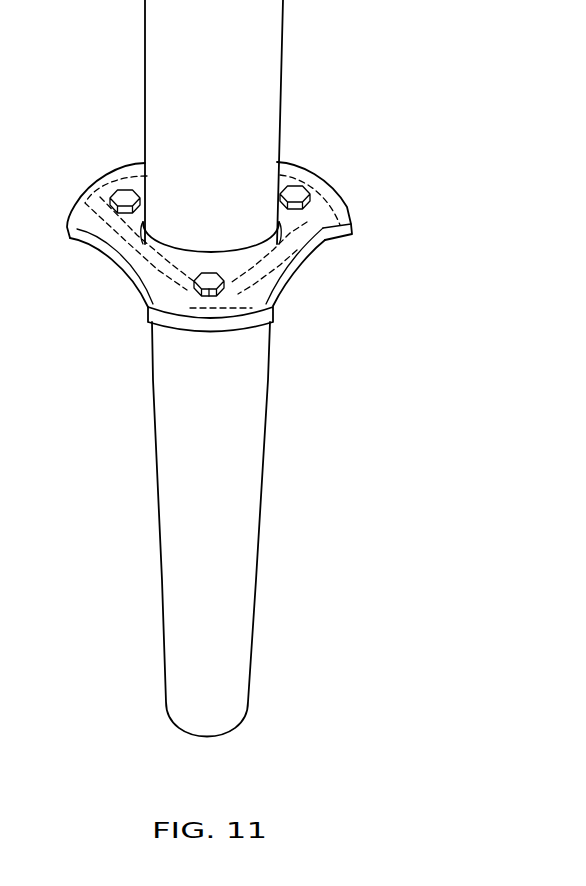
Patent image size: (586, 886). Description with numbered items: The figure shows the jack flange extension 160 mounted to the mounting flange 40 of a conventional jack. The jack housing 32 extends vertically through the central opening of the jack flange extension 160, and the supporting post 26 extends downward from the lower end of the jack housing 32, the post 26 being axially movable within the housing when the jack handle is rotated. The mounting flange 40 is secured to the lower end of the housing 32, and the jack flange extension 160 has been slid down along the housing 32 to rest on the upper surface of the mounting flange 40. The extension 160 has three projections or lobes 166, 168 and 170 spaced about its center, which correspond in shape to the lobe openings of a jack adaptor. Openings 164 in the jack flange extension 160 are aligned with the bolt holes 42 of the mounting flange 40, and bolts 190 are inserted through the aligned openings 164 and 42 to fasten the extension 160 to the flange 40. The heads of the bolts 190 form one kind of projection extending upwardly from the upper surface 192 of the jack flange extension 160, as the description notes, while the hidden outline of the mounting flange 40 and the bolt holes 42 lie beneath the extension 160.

The supporting post 26 is at (247, 473).
The jack housing 32 is at (268, 112).
The mounting flange 40 is at (343, 239).
The bolt holes 42 is at (216, 294).
The jack flange extension 160 is at (244, 249).
The openings 164 is at (270, 330).
The lobe 166 is at (128, 173).
The lobe 168 is at (163, 308).
The lobe 170 is at (347, 208).
The bolts 190 is at (117, 190).
The upper surface 192 is at (320, 238).